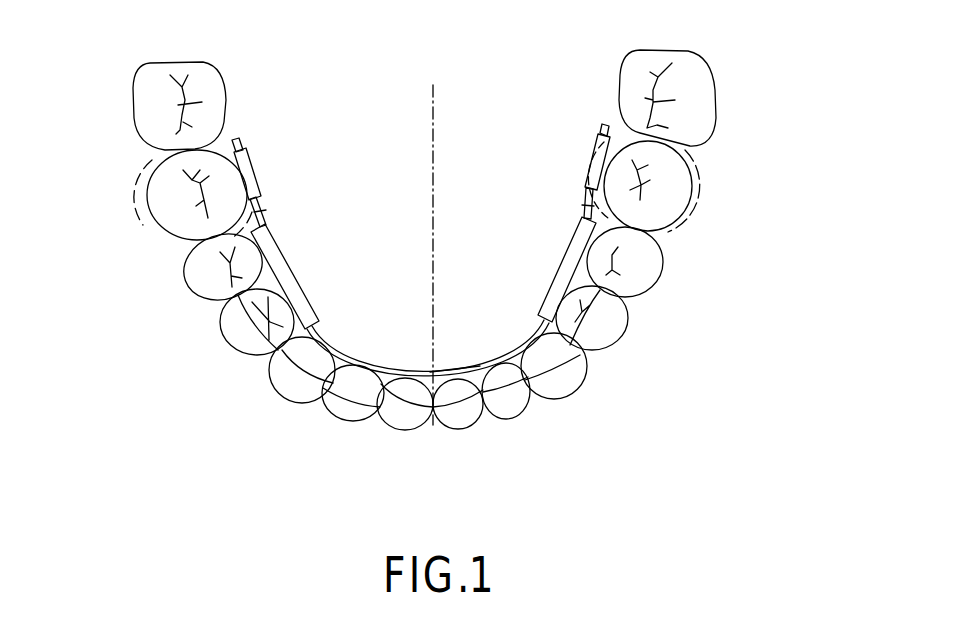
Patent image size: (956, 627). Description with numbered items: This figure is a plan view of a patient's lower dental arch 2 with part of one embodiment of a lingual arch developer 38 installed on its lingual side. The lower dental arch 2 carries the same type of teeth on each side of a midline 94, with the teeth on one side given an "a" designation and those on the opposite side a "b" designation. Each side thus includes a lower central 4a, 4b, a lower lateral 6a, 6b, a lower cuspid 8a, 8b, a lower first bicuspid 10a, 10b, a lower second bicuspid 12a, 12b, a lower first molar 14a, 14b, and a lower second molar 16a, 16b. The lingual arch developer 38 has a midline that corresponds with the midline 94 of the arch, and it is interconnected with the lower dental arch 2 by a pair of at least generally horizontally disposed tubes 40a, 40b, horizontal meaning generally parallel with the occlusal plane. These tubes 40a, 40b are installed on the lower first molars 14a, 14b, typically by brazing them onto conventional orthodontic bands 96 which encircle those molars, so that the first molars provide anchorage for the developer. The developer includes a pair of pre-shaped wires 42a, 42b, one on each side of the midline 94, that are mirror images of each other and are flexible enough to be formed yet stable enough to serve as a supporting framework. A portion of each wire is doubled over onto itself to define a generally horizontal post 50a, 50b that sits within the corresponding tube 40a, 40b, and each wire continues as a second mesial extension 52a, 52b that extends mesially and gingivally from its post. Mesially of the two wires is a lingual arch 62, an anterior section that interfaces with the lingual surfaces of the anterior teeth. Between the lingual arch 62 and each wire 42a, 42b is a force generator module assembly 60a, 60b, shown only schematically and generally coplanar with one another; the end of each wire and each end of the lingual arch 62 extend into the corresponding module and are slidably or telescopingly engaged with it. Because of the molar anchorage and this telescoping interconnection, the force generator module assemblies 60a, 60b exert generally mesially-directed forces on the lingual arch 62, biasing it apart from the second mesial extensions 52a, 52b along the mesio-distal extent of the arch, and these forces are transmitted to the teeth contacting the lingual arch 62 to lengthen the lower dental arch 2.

The lower dental arch 2 is at (540, 219).
The lower central 4a is at (470, 423).
The lower central 4b is at (392, 428).
The lower lateral 6a is at (530, 411).
The lower lateral 6b is at (327, 417).
The lower cuspid 8a is at (587, 378).
The lower cuspid 8b is at (273, 398).
The lower first bicuspid 10a is at (630, 327).
The lower first bicuspid 10b is at (224, 351).
The lower second bicuspid 12a is at (661, 275).
The lower second bicuspid 12b is at (197, 287).
The lower first molar 14a is at (676, 190).
The lower first molar 14b is at (168, 205).
The lower second molar 16a is at (712, 87).
The lower second molar 16b is at (135, 125).
The lingual arch developer 38 is at (352, 348).
The horizontal tube 40a is at (592, 157).
The horizontal tube 40b is at (253, 168).
The pre-shaped wire 42a is at (583, 193).
The pre-shaped wire 42b is at (262, 194).
The post 50a is at (607, 137).
The post 50b is at (240, 142).
The second mesial extension 52a is at (582, 208).
The second mesial extension 52b is at (265, 216).
The force generator module assembly 60a is at (556, 273).
The force generator module assembly 60b is at (297, 265).
The lingual arch 62 is at (493, 353).
The midline 94 is at (437, 98).
The orthodontic band 96 is at (140, 188).